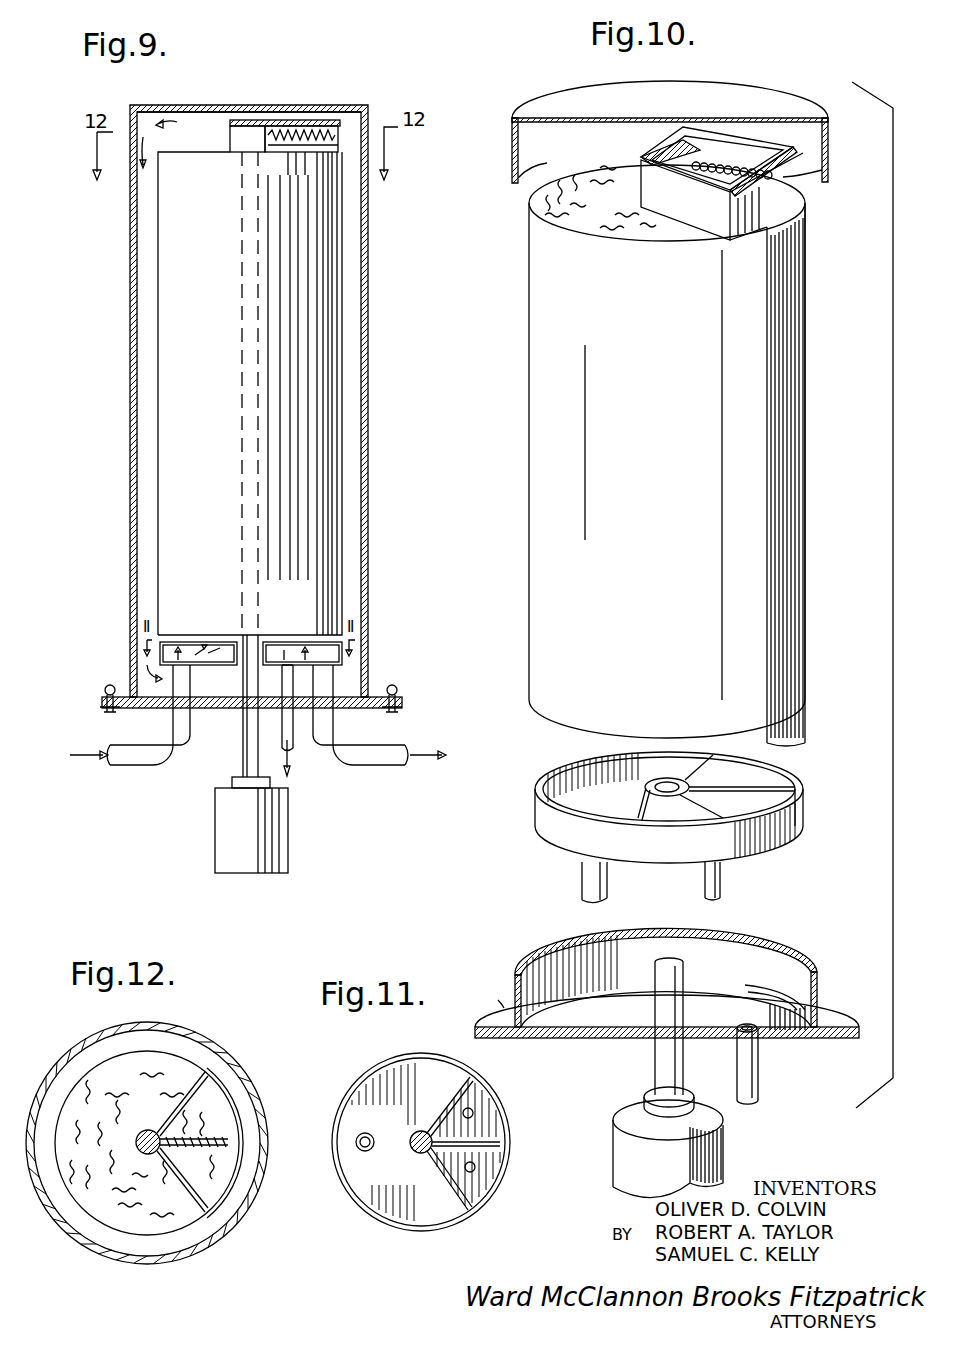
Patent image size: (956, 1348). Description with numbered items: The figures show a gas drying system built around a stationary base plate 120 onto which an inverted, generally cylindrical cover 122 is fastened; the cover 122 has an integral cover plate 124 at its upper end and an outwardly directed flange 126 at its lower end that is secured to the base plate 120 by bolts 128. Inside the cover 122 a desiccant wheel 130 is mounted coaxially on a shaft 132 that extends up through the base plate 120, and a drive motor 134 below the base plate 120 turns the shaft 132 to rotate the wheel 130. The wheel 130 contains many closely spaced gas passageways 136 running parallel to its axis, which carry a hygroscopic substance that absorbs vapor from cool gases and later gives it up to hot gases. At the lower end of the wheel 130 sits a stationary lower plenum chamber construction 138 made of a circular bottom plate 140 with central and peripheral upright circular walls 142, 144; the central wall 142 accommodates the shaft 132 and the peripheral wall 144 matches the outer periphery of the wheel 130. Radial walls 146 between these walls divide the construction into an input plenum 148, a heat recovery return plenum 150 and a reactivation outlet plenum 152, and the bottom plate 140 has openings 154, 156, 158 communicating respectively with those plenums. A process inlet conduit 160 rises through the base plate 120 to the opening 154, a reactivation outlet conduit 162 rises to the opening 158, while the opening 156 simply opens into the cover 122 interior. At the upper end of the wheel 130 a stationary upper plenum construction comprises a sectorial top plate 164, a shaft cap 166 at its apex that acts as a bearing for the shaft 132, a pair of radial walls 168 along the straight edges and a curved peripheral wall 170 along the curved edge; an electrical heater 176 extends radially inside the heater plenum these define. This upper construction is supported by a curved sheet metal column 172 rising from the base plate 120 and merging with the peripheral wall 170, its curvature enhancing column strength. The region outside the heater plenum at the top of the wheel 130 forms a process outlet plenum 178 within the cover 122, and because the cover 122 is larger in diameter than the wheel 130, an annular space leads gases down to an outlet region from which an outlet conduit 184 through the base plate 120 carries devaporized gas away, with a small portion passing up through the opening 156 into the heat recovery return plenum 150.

In FIG. 9, the base plate 120 is at (102, 701).
In FIG. 11, the base plate 120 is at (555, 1040).
In FIG. 9, the cover 122 is at (368, 218).
In FIG. 10, the cover 122 is at (510, 133).
In FIG. 11, the cover 122 is at (515, 975).
In FIG. 12, the cover 122 is at (210, 1038).
In FIG. 9, the cover plate 124 is at (322, 107).
In FIG. 10, the cover plate 124 is at (582, 100).
In FIG. 9, the flange 126 is at (104, 688).
In FIG. 11, the flange 126 is at (500, 1002).
In FIG. 9, the bolts 128 is at (107, 710).
In FIG. 9, the desiccant wheel 130 is at (165, 430).
In FIG. 10, the desiccant wheel 130 is at (548, 382).
In FIG. 12, the desiccant wheel 130 is at (100, 1068).
In FIG. 9, the shaft 132 is at (242, 740).
In FIG. 11, the shaft 132 is at (412, 1137).
In FIG. 12, the shaft 132 is at (142, 1133).
In FIG. 9, the drive motor 134 is at (215, 812).
In FIG. 11, the drive motor 134 is at (723, 1133).
In FIG. 10, the gas passageways 136 is at (562, 183).
In FIG. 12, the gas passageways 136 is at (87, 1182).
In FIG. 10, the lower plenum chamber construction 138 is at (516, 803).
In FIG. 9, the bottom plate 140 is at (205, 668).
In FIG. 10, the bottom plate 140 is at (602, 778).
In FIG. 11, the bottom plate 140 is at (393, 1070).
In FIG. 9, the central upright circular wall 142 is at (283, 643).
In FIG. 10, the central upright circular wall 142 is at (652, 778).
In FIG. 9, the peripheral upright circular wall 144 is at (168, 642).
In FIG. 10, the peripheral upright circular wall 144 is at (552, 778).
In FIG. 11, the peripheral upright circular wall 144 is at (368, 1077).
In FIG. 10, the radial walls 146 is at (695, 772).
In FIG. 11, the radial walls 146 is at (468, 1085).
In FIG. 9, the input plenum 148 is at (197, 643).
In FIG. 10, the input plenum 148 is at (568, 805).
In FIG. 11, the input plenum 148 is at (398, 1215).
In FIG. 10, the heat recovery return plenum 150 is at (767, 780).
In FIG. 11, the heat recovery return plenum 150 is at (480, 1095).
In FIG. 9, the reactivation outlet plenum 152 is at (320, 643).
In FIG. 10, the reactivation outlet plenum 152 is at (797, 790).
In FIG. 11, the reactivation outlet plenum 152 is at (482, 1193).
In FIG. 9, the opening 154 is at (175, 682).
In FIG. 11, the opening 154 is at (355, 1142).
In FIG. 11, the opening 156 is at (473, 1113).
In FIG. 11, the opening 158 is at (476, 1170).
In FIG. 9, the process inlet conduit 160 is at (130, 767).
In FIG. 10, the process inlet conduit 160 is at (590, 878).
In FIG. 9, the reactivation outlet conduit 162 is at (228, 127).
In FIG. 10, the reactivation outlet conduit 162 is at (650, 134).
In FIG. 12, the reactivation outlet conduit 162 is at (237, 1087).
In FIG. 9, the sectorial top plate 164 is at (282, 127).
In FIG. 10, the sectorial top plate 164 is at (727, 135).
In FIG. 9, the shaft cap 166 is at (232, 138).
In FIG. 10, the radial walls 168 is at (708, 215).
In FIG. 12, the radial walls 168 is at (183, 1080).
In FIG. 9, the curved peripheral wall 170 is at (340, 130).
In FIG. 10, the curved peripheral wall 170 is at (752, 218).
In FIG. 12, the curved peripheral wall 170 is at (232, 1187).
In FIG. 10, the curved sheet metal column 172 is at (793, 440).
In FIG. 11, the curved sheet metal column 172 is at (748, 993).
In FIG. 9, the electrical heater 176 is at (313, 150).
In FIG. 10, the electrical heater 176 is at (767, 177).
In FIG. 9, the process outlet plenum 178 is at (362, 472).
In FIG. 12, the process outlet plenum 178 is at (227, 1073).
In FIG. 9, the outlet conduit 184 is at (368, 765).
In FIG. 11, the outlet conduit 184 is at (758, 1072).